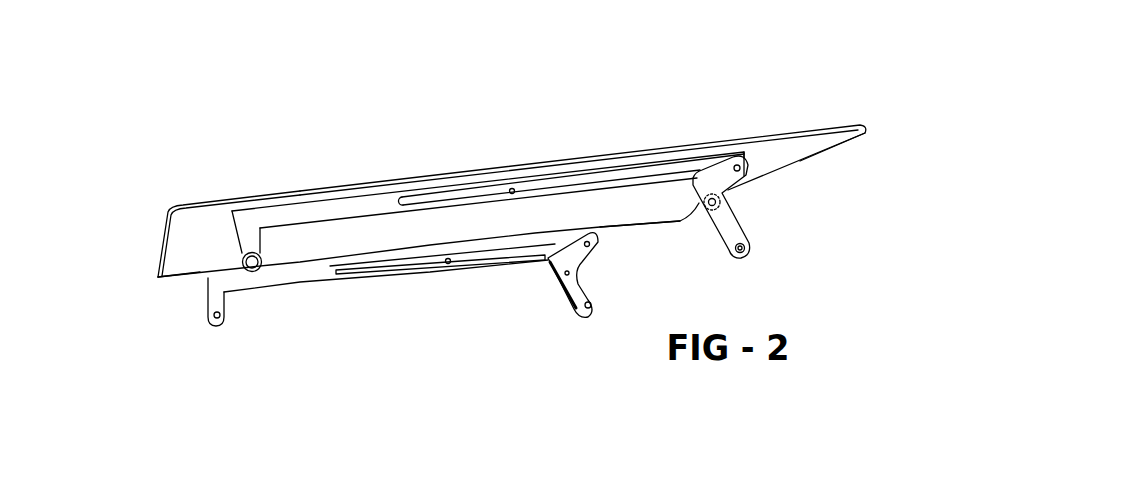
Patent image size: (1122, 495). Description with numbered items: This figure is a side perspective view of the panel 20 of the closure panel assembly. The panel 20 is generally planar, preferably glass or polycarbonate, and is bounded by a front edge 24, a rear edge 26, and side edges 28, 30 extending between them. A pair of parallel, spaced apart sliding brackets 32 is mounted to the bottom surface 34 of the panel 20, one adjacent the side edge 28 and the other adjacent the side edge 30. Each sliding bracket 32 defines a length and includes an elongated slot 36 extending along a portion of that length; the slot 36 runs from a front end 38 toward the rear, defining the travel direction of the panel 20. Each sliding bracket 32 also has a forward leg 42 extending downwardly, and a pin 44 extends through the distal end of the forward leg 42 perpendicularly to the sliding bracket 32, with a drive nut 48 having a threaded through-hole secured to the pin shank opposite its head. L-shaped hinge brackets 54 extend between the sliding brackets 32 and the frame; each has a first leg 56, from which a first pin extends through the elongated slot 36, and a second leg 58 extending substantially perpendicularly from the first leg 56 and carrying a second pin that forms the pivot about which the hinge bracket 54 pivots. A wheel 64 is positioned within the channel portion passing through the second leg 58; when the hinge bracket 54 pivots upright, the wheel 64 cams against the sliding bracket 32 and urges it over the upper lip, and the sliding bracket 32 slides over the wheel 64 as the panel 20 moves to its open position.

The panel 20 is at (137, 310).
The front edge 24 is at (183, 229).
The rear edge 26 is at (850, 187).
The side edge 28 is at (641, 260).
The side edge 30 is at (549, 112).
The sliding bracket 32 is at (389, 231).
The bottom surface 34 is at (413, 240).
The elongated slot 36 is at (514, 189).
The front end 38 is at (398, 200).
The forward leg 42 is at (168, 257).
The pin 44 is at (196, 389).
The drive nut 48 is at (248, 285).
The L-shaped hinge bracket 54 is at (634, 230).
The first leg 56 is at (813, 131).
The second leg 58 is at (713, 242).
The wheel 64 is at (718, 208).